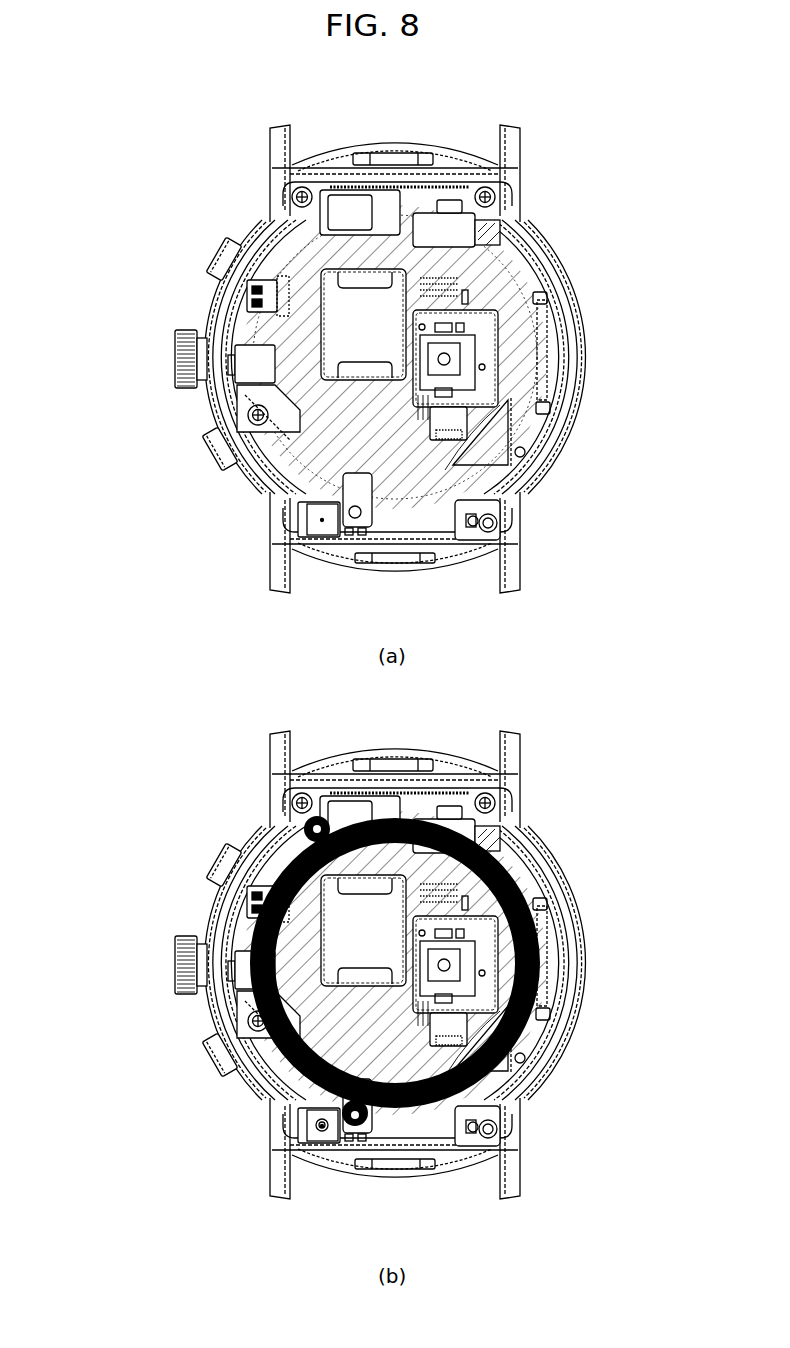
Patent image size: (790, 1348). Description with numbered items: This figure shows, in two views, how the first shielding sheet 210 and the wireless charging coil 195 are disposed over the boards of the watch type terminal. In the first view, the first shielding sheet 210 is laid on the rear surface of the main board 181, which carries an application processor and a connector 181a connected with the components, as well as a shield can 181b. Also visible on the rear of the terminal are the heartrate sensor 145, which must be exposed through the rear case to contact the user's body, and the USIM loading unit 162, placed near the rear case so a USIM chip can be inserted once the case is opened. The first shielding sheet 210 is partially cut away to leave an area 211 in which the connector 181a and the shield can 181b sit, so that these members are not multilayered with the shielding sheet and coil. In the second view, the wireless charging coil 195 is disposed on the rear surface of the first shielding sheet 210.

The main board 181 is at (333, 524).
The connector 181a is at (342, 208).
The shield can 181b is at (287, 286).
The USIM loading unit 162 is at (377, 316).
The first shielding sheet 210 is at (517, 337).
The heartrate sensor 145 is at (486, 368).
The cut-away area 211 is at (487, 430).
The wireless charging coil 195 is at (497, 856).